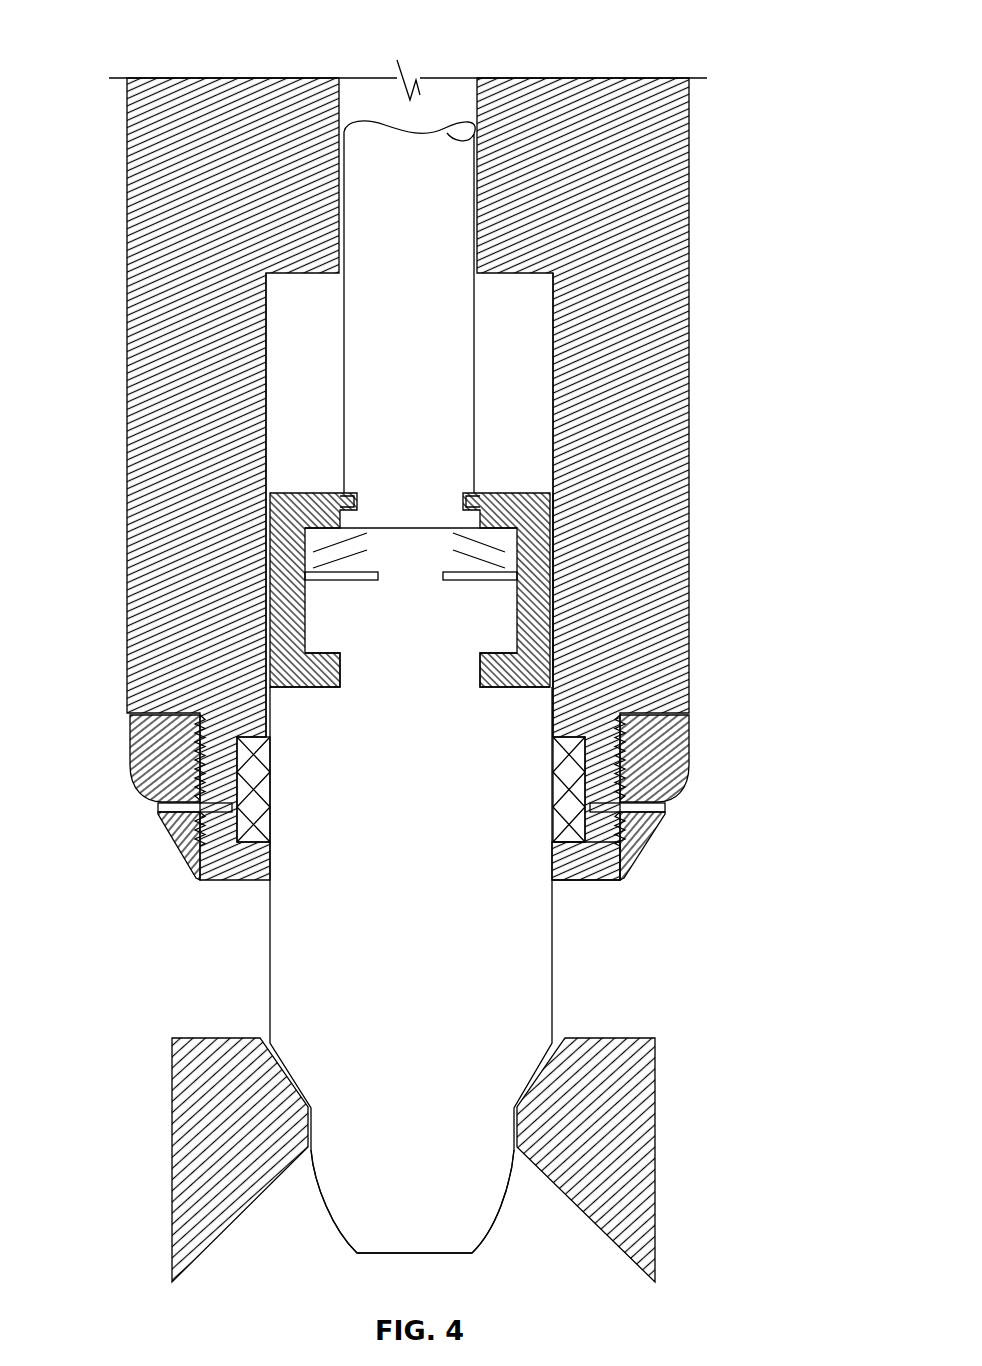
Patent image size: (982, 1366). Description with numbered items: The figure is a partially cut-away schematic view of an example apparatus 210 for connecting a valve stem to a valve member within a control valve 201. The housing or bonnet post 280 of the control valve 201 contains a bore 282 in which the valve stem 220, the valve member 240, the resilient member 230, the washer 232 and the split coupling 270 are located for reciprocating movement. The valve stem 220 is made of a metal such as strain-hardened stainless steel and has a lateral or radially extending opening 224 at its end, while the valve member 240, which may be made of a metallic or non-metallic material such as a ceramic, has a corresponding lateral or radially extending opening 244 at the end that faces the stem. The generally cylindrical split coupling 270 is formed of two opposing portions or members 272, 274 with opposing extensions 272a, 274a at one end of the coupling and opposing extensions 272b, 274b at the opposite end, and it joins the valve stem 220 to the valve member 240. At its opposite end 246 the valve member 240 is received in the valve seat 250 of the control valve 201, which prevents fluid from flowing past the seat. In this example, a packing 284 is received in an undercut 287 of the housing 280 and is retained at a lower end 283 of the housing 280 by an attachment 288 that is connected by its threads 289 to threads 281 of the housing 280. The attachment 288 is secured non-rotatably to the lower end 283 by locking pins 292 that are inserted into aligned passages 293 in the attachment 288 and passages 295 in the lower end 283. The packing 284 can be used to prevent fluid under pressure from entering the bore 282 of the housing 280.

The apparatus 210 is at (136, 41).
The control valve 201 is at (166, 960).
The housing 280 is at (676, 452).
The bore 282 is at (448, 90).
The lateral opening 224 is at (323, 491).
The valve stem 220 is at (455, 230).
The split coupling 270 is at (553, 647).
The first coupling member 272 is at (282, 590).
The first extension 272a is at (355, 492).
The first opposite extension 272b is at (328, 678).
The second coupling member 274 is at (540, 598).
The second extension 274a is at (481, 492).
The second opposite extension 274b is at (493, 673).
The resilient member 230 is at (475, 549).
The washer 232 is at (480, 575).
The lateral opening 244 is at (556, 688).
The housing threads 281 is at (197, 742).
The lower end 283 is at (182, 848).
The undercut 287 is at (242, 757).
The attachment 288 is at (682, 748).
The attachment threads 289 is at (640, 714).
The attachment passages 293 is at (668, 808).
The locking pins 292 is at (667, 812).
The packing 284 is at (578, 752).
The lower end passages 295 is at (612, 843).
The valve member 240 is at (537, 938).
The valve member end 246 is at (488, 1195).
The valve seat 250 is at (620, 1036).